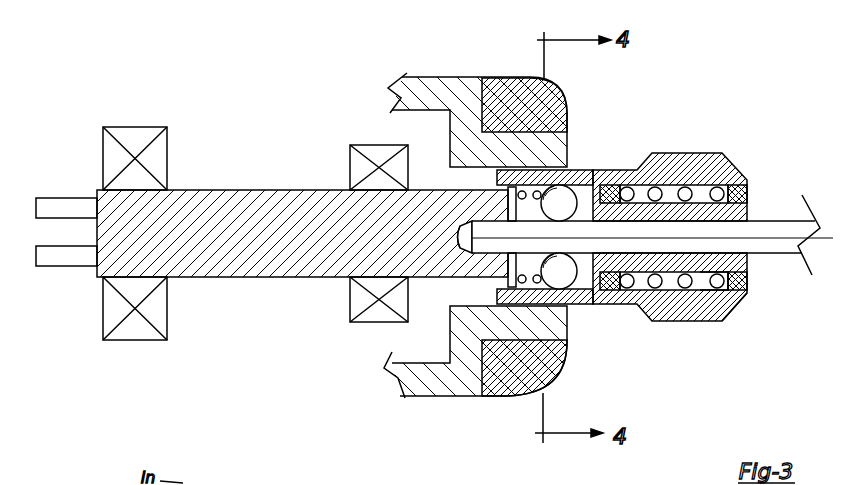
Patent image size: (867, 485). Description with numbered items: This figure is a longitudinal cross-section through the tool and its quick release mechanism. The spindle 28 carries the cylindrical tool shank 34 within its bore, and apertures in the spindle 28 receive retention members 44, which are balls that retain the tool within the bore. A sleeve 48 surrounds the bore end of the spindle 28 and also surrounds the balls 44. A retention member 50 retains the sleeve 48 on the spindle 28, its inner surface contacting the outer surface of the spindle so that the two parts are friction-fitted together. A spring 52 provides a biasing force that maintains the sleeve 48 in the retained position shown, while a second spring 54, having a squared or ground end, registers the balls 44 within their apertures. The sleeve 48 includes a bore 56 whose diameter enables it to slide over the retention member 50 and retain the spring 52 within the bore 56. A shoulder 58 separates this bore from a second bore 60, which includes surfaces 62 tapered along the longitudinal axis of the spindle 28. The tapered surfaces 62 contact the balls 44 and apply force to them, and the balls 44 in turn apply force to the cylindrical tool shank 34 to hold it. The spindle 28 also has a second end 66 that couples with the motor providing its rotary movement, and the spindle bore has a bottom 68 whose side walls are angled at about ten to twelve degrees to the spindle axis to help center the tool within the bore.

The spindle 28 is at (287, 198).
The cylindrical tool shank 34 is at (763, 227).
The retention members 44 is at (522, 191).
The sleeve 48 is at (703, 170).
The retention member 50 is at (748, 283).
The spring 52 is at (710, 315).
The spring 54 is at (567, 197).
The bore 56 is at (712, 286).
The shoulder 58 is at (623, 285).
The second bore 60 is at (511, 191).
The tapered surfaces 62 is at (622, 187).
The second end 66 is at (78, 202).
The bottom 68 is at (457, 246).